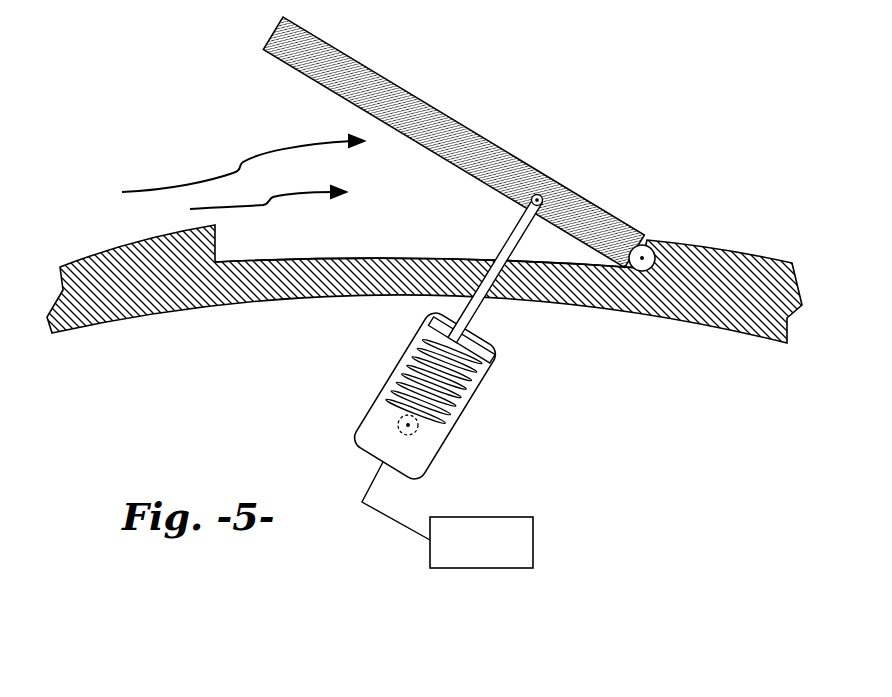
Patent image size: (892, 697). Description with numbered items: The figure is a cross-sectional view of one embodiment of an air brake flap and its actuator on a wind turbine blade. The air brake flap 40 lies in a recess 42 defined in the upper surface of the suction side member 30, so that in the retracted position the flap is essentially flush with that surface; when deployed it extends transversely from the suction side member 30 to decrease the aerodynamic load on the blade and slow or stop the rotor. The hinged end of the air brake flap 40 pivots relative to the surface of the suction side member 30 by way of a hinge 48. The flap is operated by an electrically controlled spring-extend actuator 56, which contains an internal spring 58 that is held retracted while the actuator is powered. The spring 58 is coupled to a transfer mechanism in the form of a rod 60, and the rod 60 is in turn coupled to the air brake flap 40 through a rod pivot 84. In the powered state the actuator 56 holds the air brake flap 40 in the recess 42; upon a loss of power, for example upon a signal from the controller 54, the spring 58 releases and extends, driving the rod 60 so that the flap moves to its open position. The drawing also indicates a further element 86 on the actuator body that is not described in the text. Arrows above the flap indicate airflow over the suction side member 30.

The suction side member 30 is at (85, 258).
The air brake flap 40 is at (480, 137).
The recess 42 is at (372, 258).
The hinge 48 is at (642, 258).
The controller 54 is at (502, 568).
The spring-extend actuator 56 is at (566, 391).
The spring 58 is at (468, 375).
The rod 60 is at (498, 242).
The rod pivot 84 is at (545, 193).
The sensor 86 is at (416, 421).